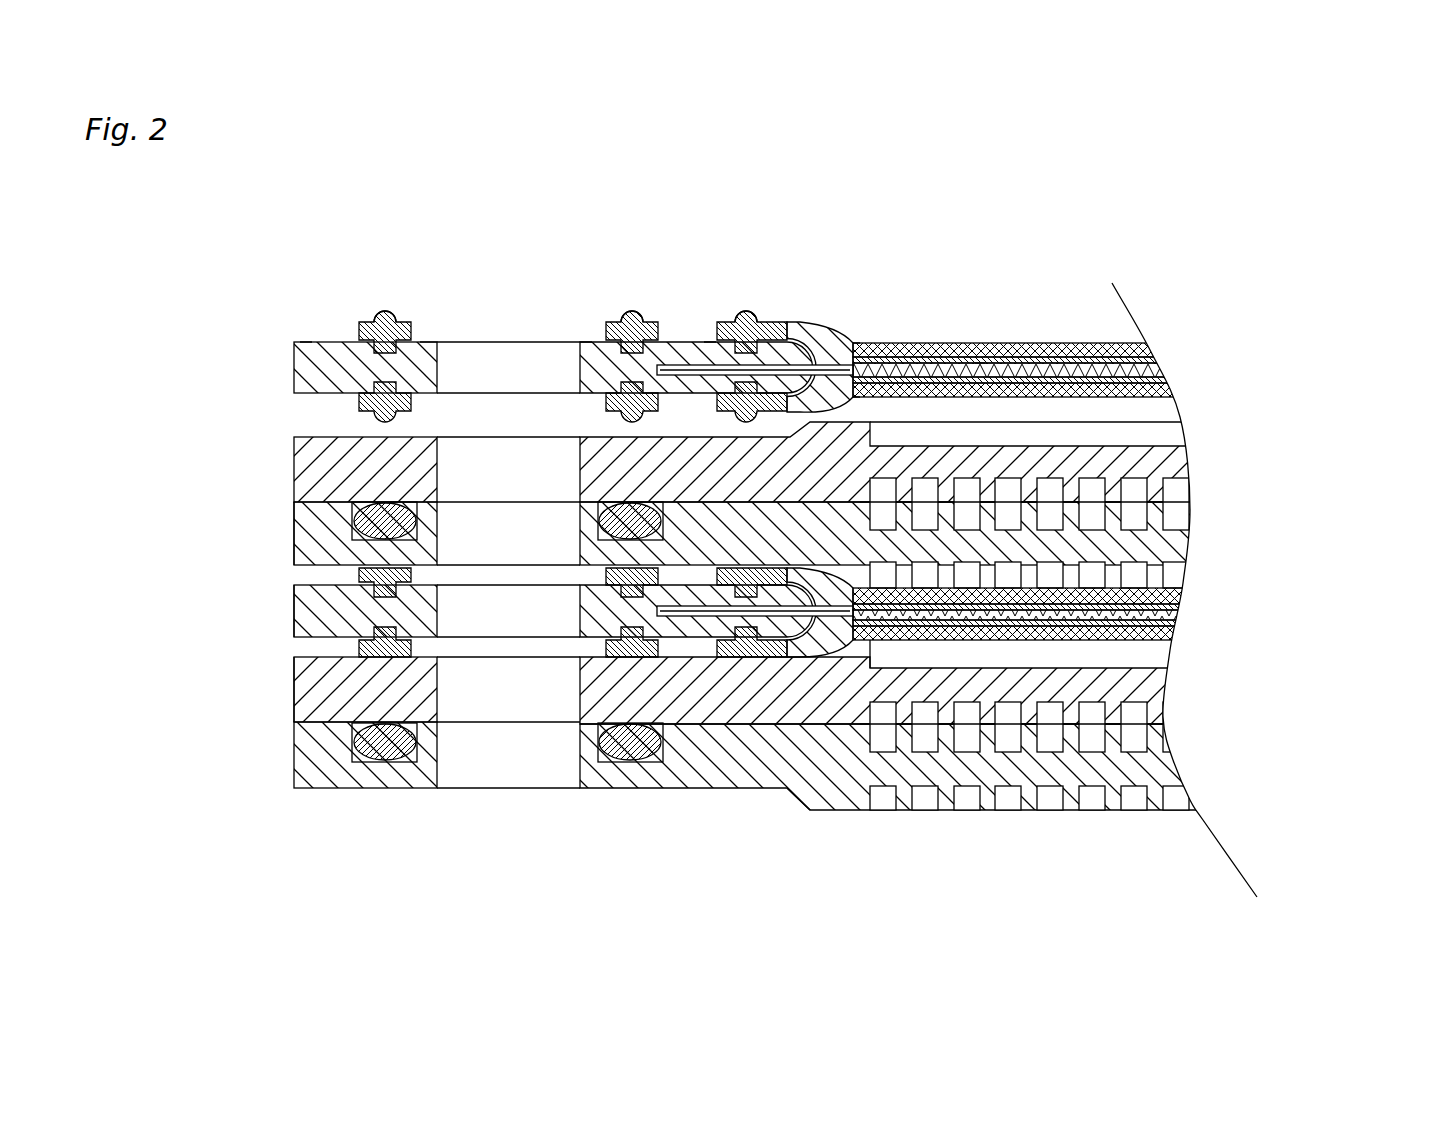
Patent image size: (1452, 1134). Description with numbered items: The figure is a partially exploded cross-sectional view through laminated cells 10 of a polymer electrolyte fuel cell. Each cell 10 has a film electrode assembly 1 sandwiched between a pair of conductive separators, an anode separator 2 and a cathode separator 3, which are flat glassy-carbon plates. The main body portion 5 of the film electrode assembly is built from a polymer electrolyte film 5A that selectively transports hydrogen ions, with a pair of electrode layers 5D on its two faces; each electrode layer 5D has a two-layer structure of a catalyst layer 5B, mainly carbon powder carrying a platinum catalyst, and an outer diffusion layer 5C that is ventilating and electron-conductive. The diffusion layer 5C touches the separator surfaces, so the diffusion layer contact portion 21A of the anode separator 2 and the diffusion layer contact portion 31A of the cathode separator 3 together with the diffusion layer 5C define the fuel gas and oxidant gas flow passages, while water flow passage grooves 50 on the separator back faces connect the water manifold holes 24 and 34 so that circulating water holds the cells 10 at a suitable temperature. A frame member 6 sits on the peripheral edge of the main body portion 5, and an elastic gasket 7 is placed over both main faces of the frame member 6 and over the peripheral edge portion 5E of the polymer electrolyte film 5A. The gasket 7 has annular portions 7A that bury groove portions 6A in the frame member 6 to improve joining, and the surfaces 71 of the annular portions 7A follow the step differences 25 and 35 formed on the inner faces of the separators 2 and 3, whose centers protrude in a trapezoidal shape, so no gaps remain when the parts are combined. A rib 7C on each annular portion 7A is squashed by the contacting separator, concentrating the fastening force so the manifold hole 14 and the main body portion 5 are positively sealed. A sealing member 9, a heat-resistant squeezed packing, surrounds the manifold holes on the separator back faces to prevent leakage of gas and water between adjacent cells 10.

The film electrode assembly 1 is at (294, 355).
The anode separator 2 is at (294, 462).
The cathode separator 3 is at (294, 525).
The cell 10 is at (147, 503).
The manifold hole 14 is at (467, 343).
The water manifold hole 24 is at (437, 448).
The water manifold hole 34 is at (437, 550).
The sealing member 9 is at (418, 510).
The frame member 6 is at (427, 343).
The groove portion 6A is at (307, 343).
The gasket 7 is at (403, 321).
The rib 7C is at (383, 312).
The annular portion 7A is at (793, 343).
The main body portion of the film electrode assembly 5 is at (1152, 448).
The polymer electrolyte film 5A is at (1031, 491).
The catalyst layer 5B is at (1031, 491).
The diffusion layer 5C is at (1031, 491).
The electrode layer 5D is at (856, 370).
The peripheral edge portion of the polymer electrolyte film 5E is at (843, 343).
The surface of the annular portion 71 is at (823, 343).
The step difference 25 is at (978, 363).
The diffusion layer contact portion 21A is at (1160, 435).
The diffusion layer contact portion 31A is at (1178, 580).
The water flow passage groove 50 is at (1178, 517).
The step difference 35 is at (840, 600).